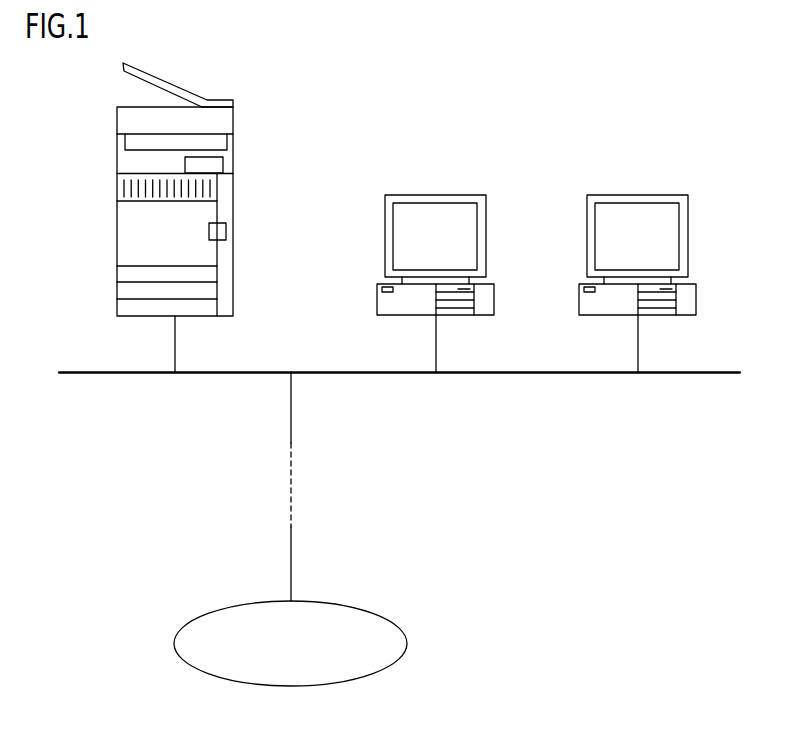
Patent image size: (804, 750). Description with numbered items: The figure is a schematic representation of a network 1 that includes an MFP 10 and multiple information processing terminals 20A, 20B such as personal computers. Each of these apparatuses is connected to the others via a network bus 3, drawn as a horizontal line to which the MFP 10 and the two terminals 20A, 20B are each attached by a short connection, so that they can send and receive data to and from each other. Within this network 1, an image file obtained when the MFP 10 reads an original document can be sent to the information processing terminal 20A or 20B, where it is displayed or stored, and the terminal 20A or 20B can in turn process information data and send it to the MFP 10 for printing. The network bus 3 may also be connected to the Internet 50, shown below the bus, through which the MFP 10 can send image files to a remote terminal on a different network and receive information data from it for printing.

The network 1 is at (502, 413).
The network bus 3 is at (347, 373).
The MFP 10 is at (233, 181).
The information processing terminal 20A is at (486, 225).
The information processing terminal 20B is at (689, 220).
The Internet 50 is at (237, 684).